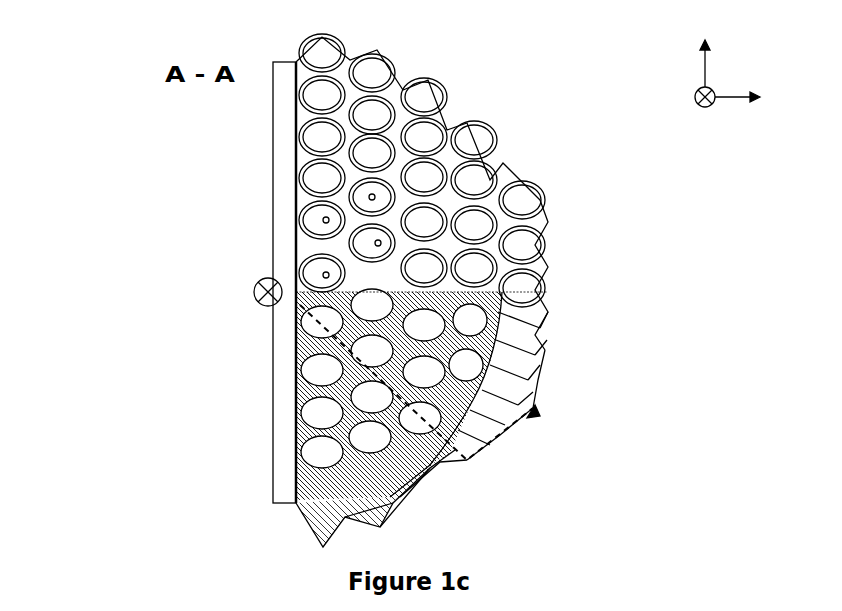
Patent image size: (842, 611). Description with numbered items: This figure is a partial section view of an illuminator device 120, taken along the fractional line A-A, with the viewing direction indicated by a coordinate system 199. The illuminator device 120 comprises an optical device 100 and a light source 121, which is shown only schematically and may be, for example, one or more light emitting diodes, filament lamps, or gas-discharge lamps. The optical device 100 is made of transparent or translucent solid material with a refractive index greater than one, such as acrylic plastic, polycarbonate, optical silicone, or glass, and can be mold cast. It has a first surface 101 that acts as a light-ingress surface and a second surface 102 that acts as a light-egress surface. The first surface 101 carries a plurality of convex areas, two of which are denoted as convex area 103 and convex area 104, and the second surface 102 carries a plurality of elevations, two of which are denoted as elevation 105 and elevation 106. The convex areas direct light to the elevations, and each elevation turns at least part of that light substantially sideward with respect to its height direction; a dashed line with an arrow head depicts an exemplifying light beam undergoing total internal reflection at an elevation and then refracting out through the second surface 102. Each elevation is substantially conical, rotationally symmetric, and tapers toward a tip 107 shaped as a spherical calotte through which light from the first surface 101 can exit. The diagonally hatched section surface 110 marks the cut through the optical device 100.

The optical device 100 is at (272, 212).
The first surface 101 is at (373, 387).
The second surface 102 is at (457, 168).
The convex area 103 is at (372, 402).
The convex area 104 is at (317, 483).
The elevation 105 is at (535, 358).
The elevation 106 is at (530, 220).
The tip 107 is at (385, 522).
The section surface 110 is at (430, 480).
The illuminator device 120 is at (614, 296).
The light source 121 is at (256, 283).
The coordinate system 199 is at (760, 75).